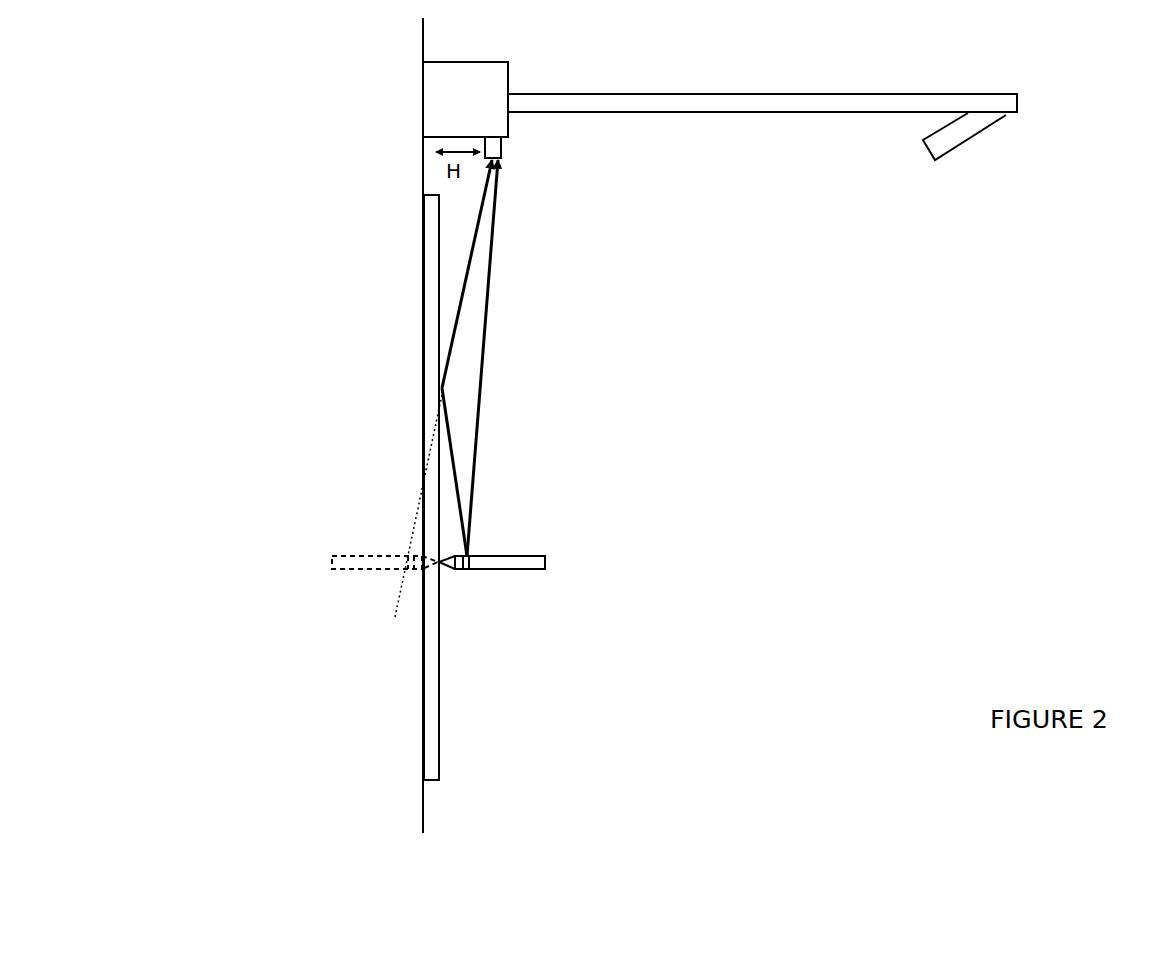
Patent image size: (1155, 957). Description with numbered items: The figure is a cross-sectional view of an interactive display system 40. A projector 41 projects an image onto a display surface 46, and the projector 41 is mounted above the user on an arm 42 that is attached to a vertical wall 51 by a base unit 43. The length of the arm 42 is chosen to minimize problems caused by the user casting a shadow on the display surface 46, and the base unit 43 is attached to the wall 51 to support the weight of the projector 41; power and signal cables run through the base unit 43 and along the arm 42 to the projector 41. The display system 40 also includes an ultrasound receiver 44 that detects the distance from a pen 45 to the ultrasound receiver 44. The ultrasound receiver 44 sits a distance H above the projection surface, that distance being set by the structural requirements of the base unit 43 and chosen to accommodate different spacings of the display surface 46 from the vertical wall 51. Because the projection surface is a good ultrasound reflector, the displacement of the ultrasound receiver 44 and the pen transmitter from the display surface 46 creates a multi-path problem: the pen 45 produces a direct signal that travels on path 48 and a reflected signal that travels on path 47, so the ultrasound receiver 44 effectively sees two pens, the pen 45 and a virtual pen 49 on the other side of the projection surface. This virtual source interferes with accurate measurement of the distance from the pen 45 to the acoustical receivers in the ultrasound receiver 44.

The display system 40 is at (175, 123).
The projector 41 is at (953, 131).
The arm 42 is at (789, 102).
The base unit 43 is at (433, 120).
The ultrasound receiver 44 is at (501, 148).
The pen 45 is at (545, 562).
The display surface 46 is at (439, 731).
The path of reflected signal 47 is at (463, 273).
The path of direct signal 48 is at (487, 313).
The virtual pen 49 is at (345, 561).
The vertical wall 51 is at (423, 36).